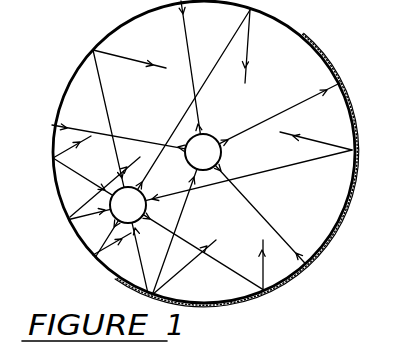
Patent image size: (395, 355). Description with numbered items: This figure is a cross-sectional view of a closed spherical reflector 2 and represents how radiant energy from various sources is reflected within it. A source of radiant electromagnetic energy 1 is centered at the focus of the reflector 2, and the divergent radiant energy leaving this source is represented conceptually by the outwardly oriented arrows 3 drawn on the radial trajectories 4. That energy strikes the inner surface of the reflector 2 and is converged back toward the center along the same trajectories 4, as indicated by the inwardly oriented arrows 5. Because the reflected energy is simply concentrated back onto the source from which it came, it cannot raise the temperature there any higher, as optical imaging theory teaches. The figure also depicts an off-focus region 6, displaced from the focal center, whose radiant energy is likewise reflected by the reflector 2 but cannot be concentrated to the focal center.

The light source 1 is at (205, 141).
The closed spherical reflector 2 is at (333, 63).
The outwardly oriented arrows 3 is at (228, 170).
The radial trajectories 4 is at (268, 219).
The inwardly oriented arrows 5 is at (298, 255).
The off-focus region 6 is at (135, 208).